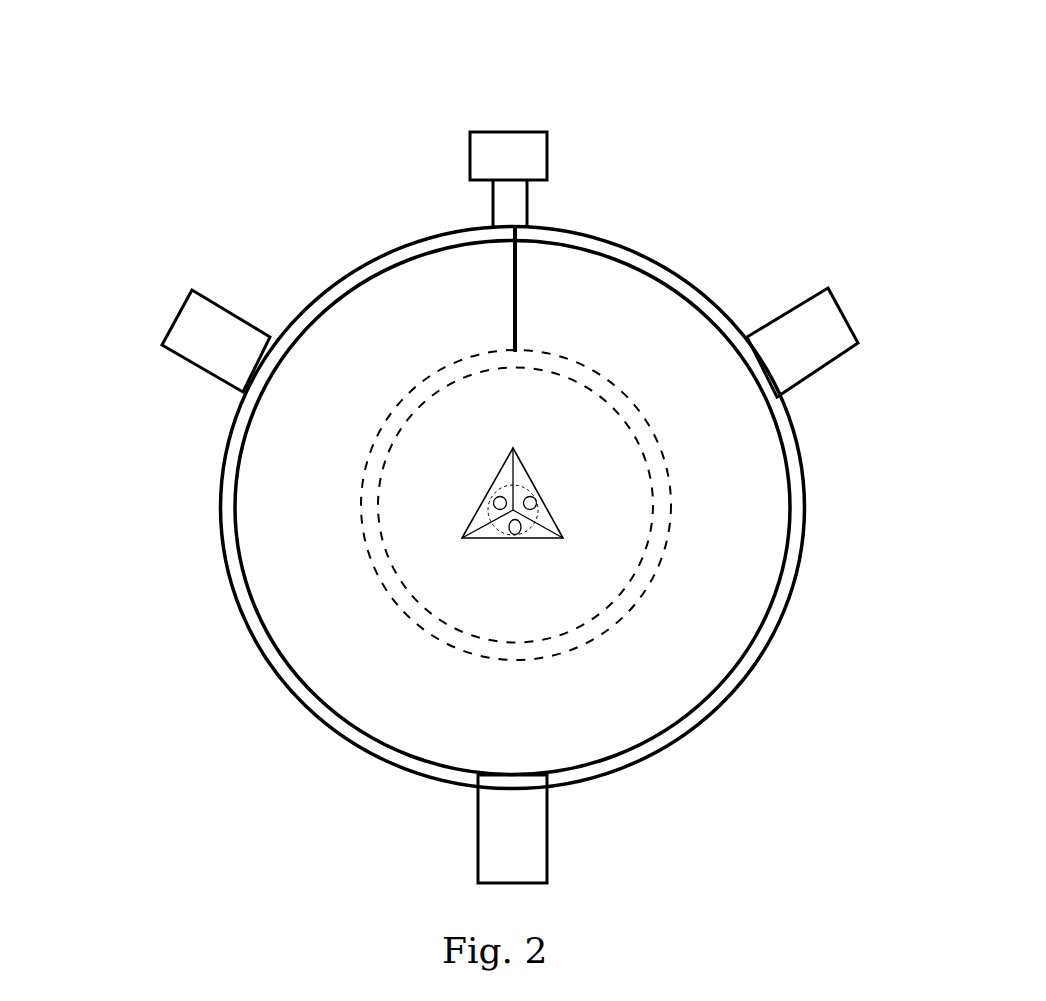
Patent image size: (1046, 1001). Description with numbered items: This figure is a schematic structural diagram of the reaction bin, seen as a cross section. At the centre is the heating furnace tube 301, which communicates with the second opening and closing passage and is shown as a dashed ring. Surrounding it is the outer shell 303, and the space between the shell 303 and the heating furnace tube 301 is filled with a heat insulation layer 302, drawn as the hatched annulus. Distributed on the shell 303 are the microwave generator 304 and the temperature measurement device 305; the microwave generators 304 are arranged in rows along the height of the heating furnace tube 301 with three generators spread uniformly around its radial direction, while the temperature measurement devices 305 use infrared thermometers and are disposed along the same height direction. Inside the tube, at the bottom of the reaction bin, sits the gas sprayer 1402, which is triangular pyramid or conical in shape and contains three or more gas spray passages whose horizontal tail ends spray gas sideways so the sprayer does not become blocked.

The heating furnace tube 301 is at (603, 617).
The heat insulation layer 302 is at (410, 708).
The shell 303 is at (804, 555).
The microwave generator 304 is at (178, 307).
The temperature measurement device 305 is at (513, 132).
The gas sprayer 1402 is at (532, 475).